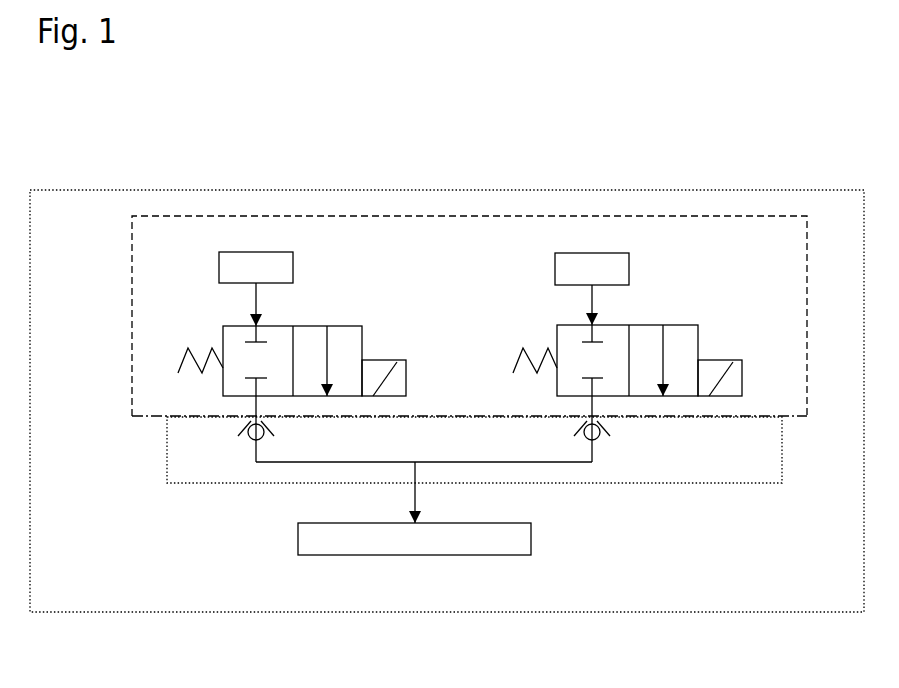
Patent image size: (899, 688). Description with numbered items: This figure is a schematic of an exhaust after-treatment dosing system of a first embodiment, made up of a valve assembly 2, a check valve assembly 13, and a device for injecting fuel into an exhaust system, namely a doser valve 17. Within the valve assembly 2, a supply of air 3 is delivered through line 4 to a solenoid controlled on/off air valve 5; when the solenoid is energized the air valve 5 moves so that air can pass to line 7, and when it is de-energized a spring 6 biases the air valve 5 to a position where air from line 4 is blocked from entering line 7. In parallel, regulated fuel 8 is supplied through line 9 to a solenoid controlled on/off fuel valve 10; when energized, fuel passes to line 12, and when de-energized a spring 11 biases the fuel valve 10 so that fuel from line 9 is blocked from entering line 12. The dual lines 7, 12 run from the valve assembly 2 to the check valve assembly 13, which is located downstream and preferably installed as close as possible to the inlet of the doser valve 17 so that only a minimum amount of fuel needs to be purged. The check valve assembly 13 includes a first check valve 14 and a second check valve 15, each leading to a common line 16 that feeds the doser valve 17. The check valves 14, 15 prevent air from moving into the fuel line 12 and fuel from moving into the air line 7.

The valve assembly 2 is at (697, 215).
The supply of air 3 is at (293, 263).
The line 4 is at (256, 292).
The solenoid controlled on/off air valve 5 is at (362, 326).
The spring 6 is at (200, 352).
The line 7 is at (256, 407).
The regulated fuel 8 is at (629, 272).
The line 9 is at (590, 298).
The solenoid controlled on/off fuel valve 10 is at (688, 325).
The spring 11 is at (530, 352).
The line 12 is at (593, 405).
The check valve assembly 13 is at (167, 485).
The first check valve 14 is at (252, 439).
The second check valve 15 is at (600, 438).
The line 16 is at (362, 462).
The doser valve 17 is at (433, 555).